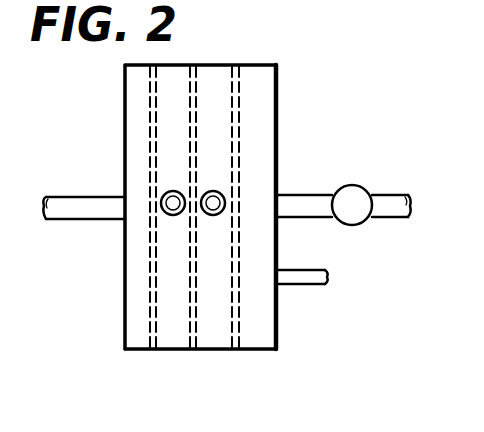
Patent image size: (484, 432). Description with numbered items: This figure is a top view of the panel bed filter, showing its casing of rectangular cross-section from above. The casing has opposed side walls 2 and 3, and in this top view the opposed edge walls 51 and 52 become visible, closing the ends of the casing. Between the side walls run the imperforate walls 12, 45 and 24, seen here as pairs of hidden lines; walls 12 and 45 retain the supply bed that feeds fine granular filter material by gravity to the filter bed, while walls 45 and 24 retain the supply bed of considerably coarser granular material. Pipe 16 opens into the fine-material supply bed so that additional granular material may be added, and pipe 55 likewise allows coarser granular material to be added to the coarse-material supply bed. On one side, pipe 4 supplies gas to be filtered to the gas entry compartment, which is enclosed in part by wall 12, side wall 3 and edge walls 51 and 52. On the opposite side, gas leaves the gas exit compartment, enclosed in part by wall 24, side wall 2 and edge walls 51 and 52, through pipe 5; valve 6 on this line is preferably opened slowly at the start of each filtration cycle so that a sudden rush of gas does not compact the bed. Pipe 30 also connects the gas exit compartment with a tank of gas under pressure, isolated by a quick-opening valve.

The side wall 2 is at (280, 309).
The side wall 3 is at (125, 312).
The pipe 4 is at (92, 196).
The pipe 5 is at (328, 179).
The valve 6 is at (364, 189).
The imperforate wall 12 is at (156, 109).
The pipe 16 is at (176, 214).
The imperforate wall 24 is at (239, 118).
The pipe 30 is at (320, 286).
The imperforate wall 45 is at (195, 102).
The edge wall 51 is at (172, 65).
The edge wall 52 is at (182, 351).
The pipe 55 is at (215, 214).